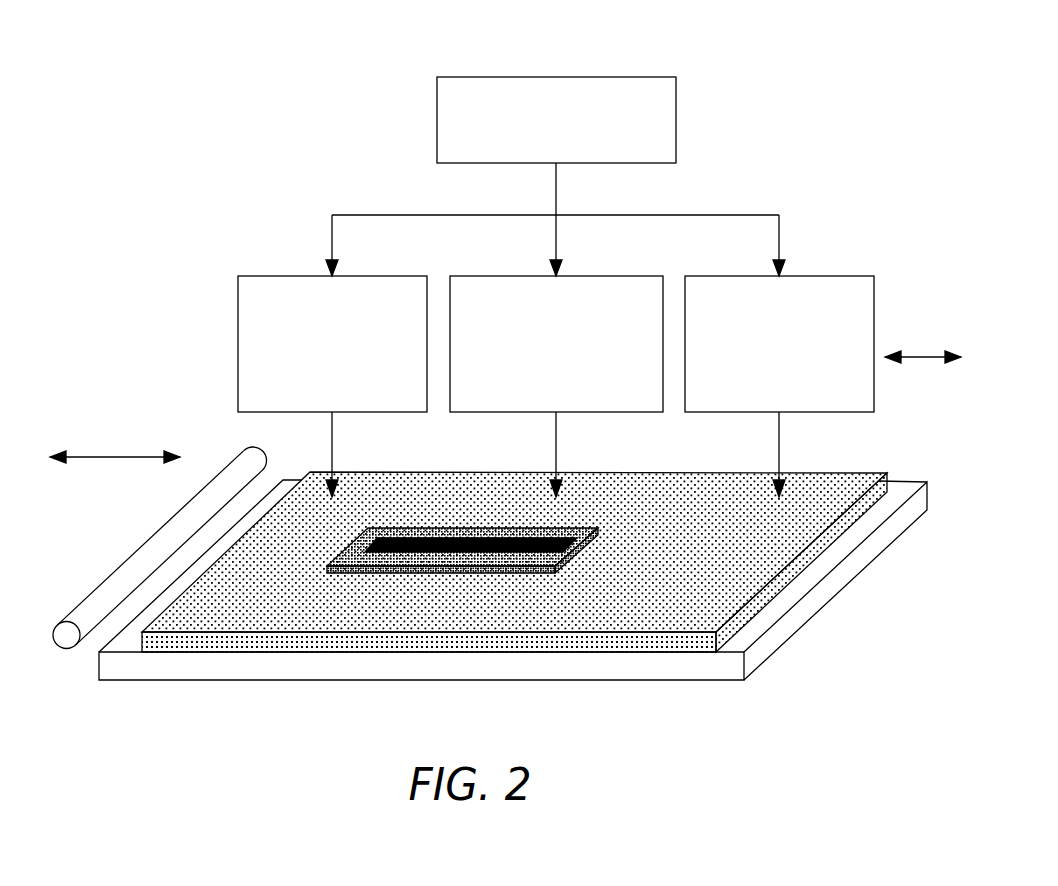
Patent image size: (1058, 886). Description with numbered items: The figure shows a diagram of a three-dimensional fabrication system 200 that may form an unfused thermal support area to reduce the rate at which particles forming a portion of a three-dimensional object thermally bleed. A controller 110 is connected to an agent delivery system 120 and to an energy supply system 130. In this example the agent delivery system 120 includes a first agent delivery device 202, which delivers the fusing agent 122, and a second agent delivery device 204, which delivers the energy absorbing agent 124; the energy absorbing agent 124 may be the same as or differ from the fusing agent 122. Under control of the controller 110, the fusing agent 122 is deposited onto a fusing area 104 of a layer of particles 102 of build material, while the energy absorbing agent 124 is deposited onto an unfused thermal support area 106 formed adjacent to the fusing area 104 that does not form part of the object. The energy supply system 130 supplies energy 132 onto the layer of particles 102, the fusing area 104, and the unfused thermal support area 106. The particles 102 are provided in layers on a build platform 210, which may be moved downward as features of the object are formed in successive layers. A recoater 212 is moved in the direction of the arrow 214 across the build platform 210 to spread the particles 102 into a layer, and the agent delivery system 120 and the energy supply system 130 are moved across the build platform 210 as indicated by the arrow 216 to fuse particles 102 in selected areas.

The 3D fabrication system 200 is at (539, 62).
The controller 110 is at (538, 144).
The agent delivery system 120 is at (216, 260).
The first agent delivery device 202 is at (313, 396).
The second agent delivery device 204 is at (537, 396).
The energy supply system 130 is at (760, 396).
The fusing agent 122 is at (333, 443).
The energy absorbing agent 124 is at (557, 443).
The energy 132 is at (780, 443).
The particles of build material 102 is at (763, 587).
The fusing area 104 is at (388, 553).
The unfused thermal support area 106 is at (468, 568).
The build platform 210 is at (640, 681).
The recoater 212 is at (65, 649).
The arrow 214 is at (122, 455).
The arrow 216 is at (918, 356).